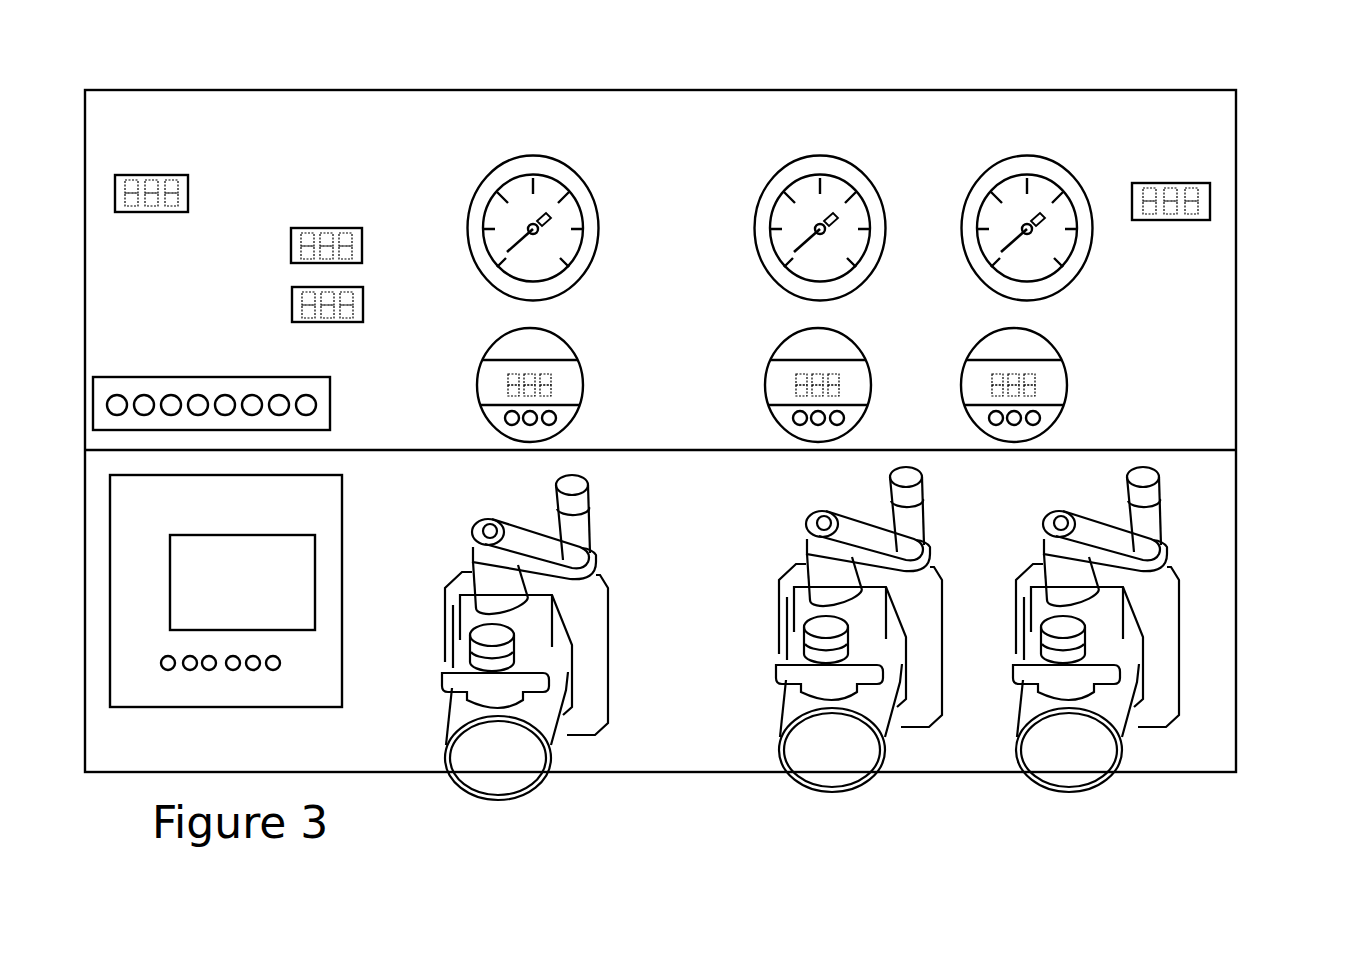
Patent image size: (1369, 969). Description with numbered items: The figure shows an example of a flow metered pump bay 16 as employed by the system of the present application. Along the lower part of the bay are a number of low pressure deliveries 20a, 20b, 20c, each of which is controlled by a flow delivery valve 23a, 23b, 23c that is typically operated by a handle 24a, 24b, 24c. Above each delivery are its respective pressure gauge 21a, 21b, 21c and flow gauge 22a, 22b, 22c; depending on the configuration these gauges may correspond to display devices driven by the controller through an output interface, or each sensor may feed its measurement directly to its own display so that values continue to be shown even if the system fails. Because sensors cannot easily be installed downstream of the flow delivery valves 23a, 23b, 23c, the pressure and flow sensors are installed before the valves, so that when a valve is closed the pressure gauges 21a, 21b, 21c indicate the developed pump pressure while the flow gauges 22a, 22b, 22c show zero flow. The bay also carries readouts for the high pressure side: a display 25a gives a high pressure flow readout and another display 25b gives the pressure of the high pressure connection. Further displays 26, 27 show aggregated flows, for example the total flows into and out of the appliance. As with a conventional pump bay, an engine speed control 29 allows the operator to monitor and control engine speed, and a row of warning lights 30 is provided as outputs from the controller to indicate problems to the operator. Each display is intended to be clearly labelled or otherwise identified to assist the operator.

The pump bay 16 is at (336, 136).
The low pressure delivery 20a is at (500, 772).
The low pressure delivery 20b is at (818, 772).
The low pressure delivery 20c is at (1050, 772).
The pressure gauge 21a is at (573, 247).
The pressure gauge 21b is at (772, 250).
The pressure gauge 21c is at (983, 225).
The flow gauge 22a is at (570, 393).
The flow gauge 22b is at (765, 398).
The flow gauge 22c is at (1067, 388).
The flow delivery valve 23a is at (530, 625).
The flow delivery valve 23b is at (887, 633).
The flow delivery valve 23c is at (1127, 618).
The handle 24a is at (570, 528).
The handle 24b is at (927, 532).
The handle 24c is at (1147, 532).
The display 25a is at (178, 188).
The display 25b is at (1160, 183).
The display 26 is at (360, 227).
The display 27 is at (292, 310).
The engine speed control 29 is at (280, 515).
The warning lights 30 is at (330, 410).